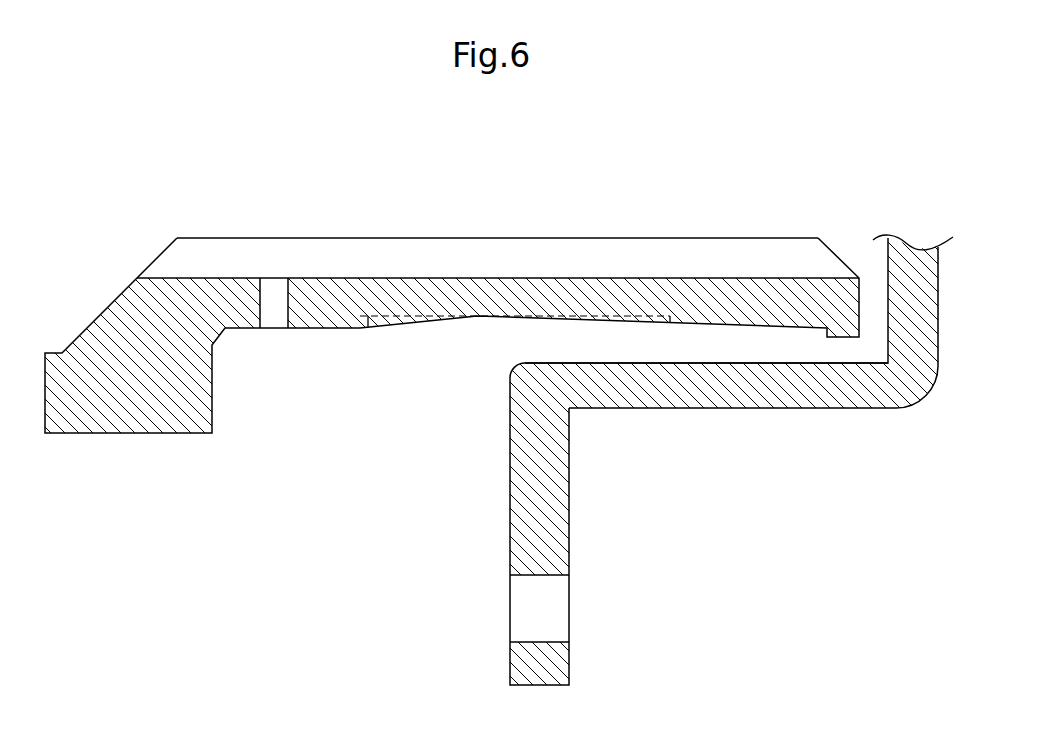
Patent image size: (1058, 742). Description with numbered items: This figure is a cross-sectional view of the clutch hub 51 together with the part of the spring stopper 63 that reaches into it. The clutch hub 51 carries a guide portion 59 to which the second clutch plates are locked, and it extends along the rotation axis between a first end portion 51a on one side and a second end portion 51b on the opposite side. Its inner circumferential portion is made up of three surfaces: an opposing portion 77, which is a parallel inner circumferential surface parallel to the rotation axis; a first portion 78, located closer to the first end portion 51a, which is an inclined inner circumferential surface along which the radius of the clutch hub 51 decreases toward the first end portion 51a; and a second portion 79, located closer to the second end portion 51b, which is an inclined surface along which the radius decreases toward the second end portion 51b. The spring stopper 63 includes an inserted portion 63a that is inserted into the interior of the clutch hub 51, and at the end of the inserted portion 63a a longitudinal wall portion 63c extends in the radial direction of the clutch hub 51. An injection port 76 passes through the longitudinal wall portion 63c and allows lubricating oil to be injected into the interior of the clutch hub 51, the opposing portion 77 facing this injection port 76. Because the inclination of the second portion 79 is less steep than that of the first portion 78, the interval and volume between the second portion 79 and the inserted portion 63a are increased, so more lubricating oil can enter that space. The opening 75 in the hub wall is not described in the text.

The clutch hub 51 is at (472, 282).
The first end portion 51a is at (157, 303).
The second end portion 51b is at (835, 292).
The guide portion 59 is at (674, 250).
The spring stopper 63 is at (818, 408).
The inserted portion 63a is at (628, 362).
The longitudinal wall portion 63c is at (517, 507).
The slit 75 is at (273, 332).
The injection port 76 is at (510, 607).
The opposing portion 77 is at (487, 318).
The first portion 78 is at (411, 323).
The second portion 79 is at (740, 330).